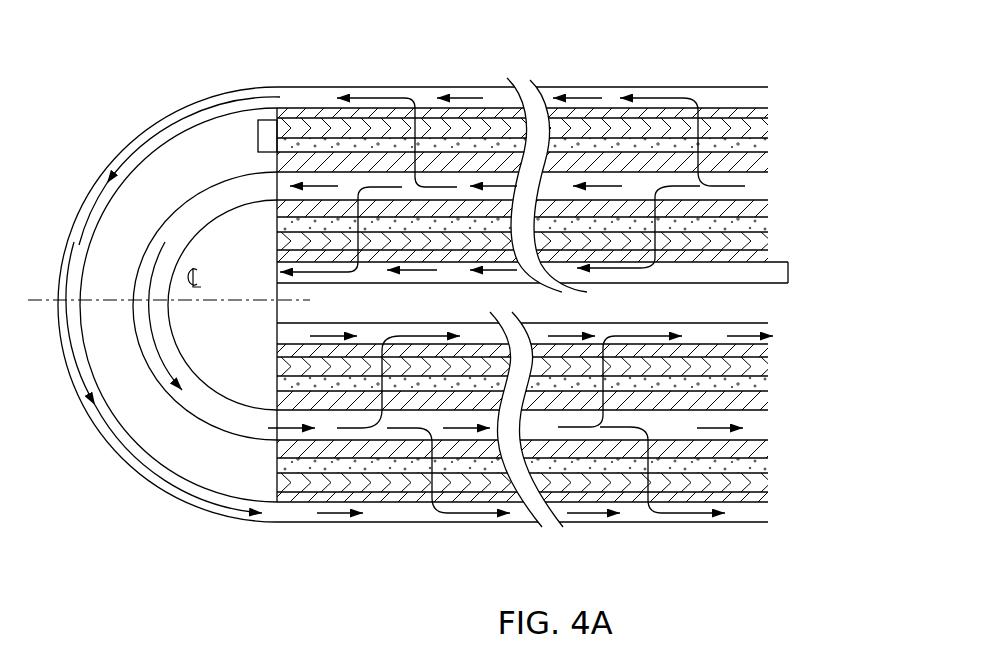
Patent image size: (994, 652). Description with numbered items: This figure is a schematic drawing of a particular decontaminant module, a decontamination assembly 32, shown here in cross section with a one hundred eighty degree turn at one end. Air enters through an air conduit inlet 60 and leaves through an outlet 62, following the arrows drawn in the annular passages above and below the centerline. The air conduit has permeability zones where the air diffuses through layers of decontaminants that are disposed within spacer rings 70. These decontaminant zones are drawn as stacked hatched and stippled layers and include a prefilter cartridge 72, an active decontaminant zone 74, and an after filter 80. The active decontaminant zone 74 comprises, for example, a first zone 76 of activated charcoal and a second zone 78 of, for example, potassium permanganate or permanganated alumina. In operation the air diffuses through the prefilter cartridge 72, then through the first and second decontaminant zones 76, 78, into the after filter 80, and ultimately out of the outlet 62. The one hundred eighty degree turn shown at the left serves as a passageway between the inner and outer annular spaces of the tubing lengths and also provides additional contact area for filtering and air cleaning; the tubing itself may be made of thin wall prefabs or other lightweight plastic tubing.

The decontamination assembly 32 is at (577, 533).
The air conduit inlet 60 is at (773, 186).
The air conduit outlet 62 is at (757, 513).
The spacer rings 70 is at (762, 130).
The prefilter cartridge 72 is at (287, 165).
The active decontaminant zone 74 is at (268, 142).
The first zone 76 is at (510, 147).
The second zone 78 is at (607, 127).
The after filter 80 is at (728, 110).